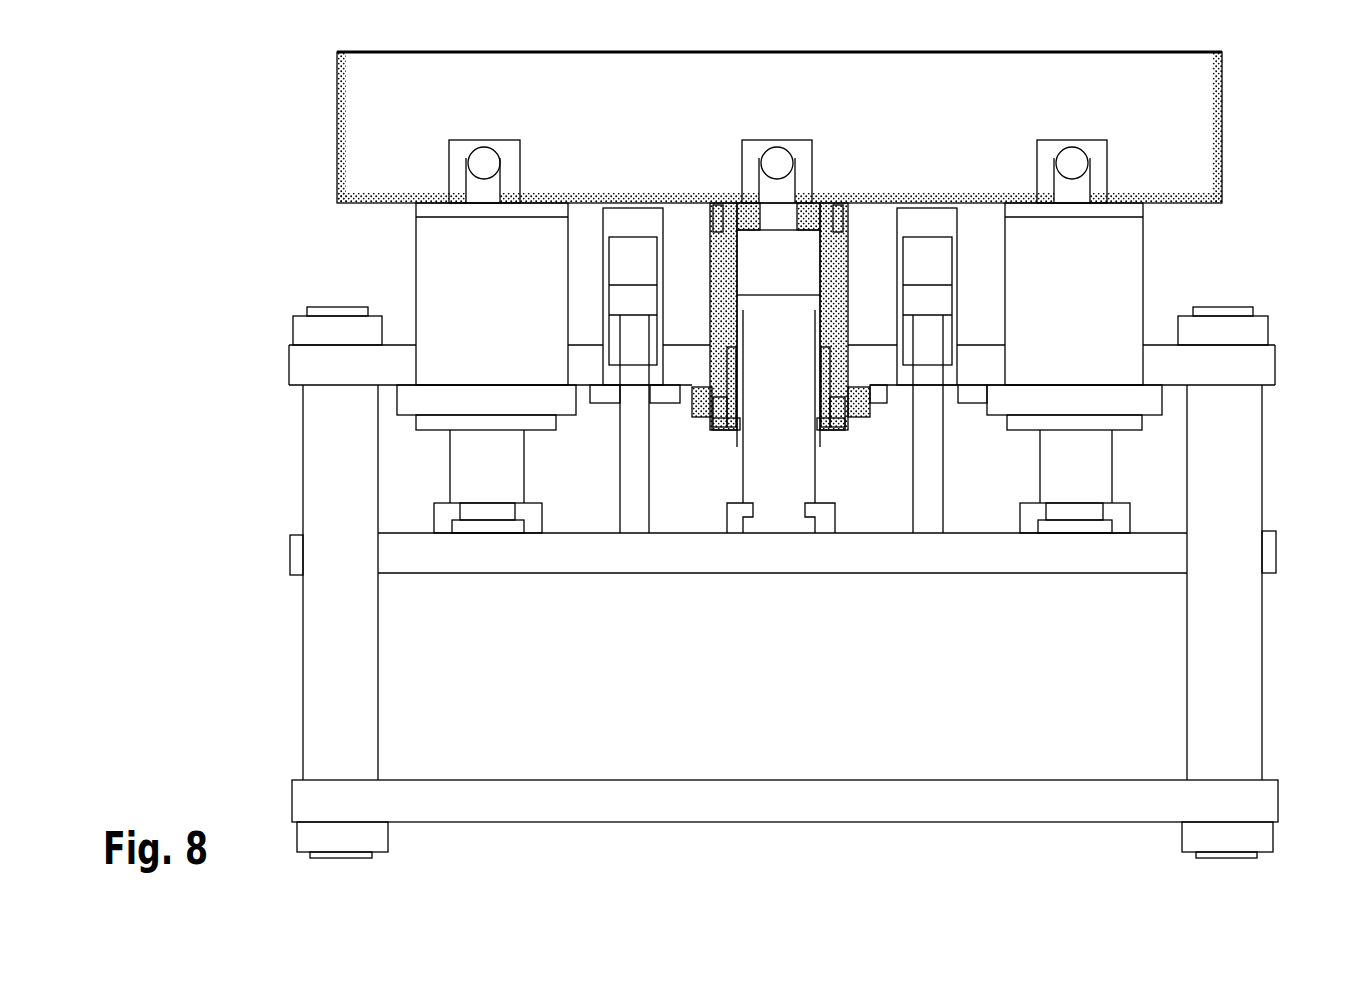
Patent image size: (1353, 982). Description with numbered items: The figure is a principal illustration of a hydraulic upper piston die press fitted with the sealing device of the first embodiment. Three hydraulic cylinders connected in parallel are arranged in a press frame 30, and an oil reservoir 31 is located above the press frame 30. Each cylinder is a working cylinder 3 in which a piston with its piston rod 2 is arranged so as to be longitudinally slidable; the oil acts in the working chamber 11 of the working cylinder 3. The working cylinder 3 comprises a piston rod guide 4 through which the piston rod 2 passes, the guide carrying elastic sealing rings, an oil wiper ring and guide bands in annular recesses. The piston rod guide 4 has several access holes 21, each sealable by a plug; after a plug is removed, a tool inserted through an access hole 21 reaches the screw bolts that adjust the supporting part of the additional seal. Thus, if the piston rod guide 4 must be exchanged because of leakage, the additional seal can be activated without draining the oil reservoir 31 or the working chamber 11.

The oil reservoir 31 is at (1175, 84).
The working cylinder 3 is at (710, 262).
The working chamber 11 is at (793, 262).
The piston rod 2 is at (790, 330).
The piston rod guide 4 is at (845, 387).
The access holes 21 is at (720, 417).
The press frame 30 is at (1225, 741).